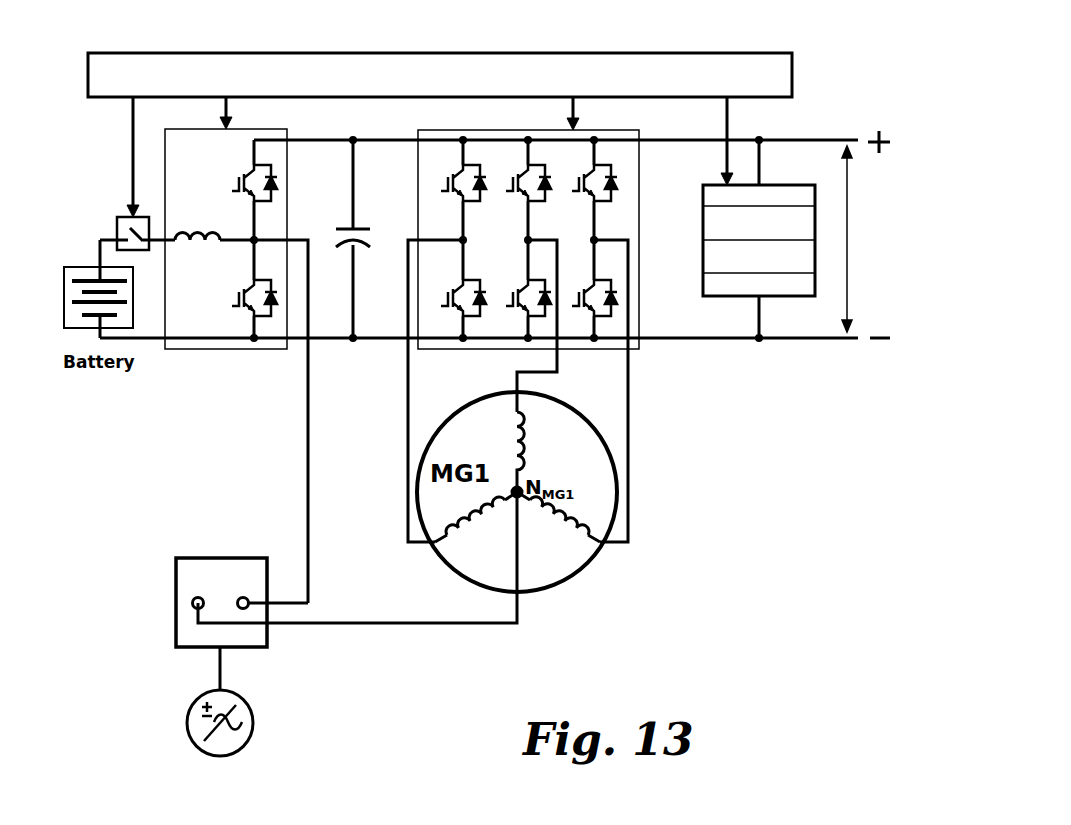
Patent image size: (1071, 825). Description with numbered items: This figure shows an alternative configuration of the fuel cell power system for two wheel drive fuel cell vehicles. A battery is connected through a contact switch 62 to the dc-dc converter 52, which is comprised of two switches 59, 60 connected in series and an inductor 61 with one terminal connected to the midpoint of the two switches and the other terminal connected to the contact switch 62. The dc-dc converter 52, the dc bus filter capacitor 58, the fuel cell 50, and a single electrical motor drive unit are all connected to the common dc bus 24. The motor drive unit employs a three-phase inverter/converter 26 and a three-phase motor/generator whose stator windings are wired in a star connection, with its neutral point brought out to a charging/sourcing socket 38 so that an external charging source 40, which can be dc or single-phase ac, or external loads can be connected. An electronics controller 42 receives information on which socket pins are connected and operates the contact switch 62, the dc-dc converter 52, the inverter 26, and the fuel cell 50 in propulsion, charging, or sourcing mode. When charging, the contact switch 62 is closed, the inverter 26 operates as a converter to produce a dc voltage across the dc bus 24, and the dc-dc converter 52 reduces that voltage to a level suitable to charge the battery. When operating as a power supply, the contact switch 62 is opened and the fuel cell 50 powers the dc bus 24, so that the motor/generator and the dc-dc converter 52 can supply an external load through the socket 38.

The electronics controller 42 is at (779, 69).
The dc-dc converter 52 is at (205, 128).
The switch 59 is at (254, 160).
The switch 60 is at (245, 310).
The inductor 61 is at (195, 245).
The contact switch 62 is at (128, 217).
The filter capacitor 58 is at (347, 250).
The inverter/converter 26 is at (631, 350).
The dc bus 24 is at (844, 247).
The fuel cell 50 is at (767, 296).
The charging/sourcing socket 38 is at (222, 558).
The external charging source 40 is at (248, 700).